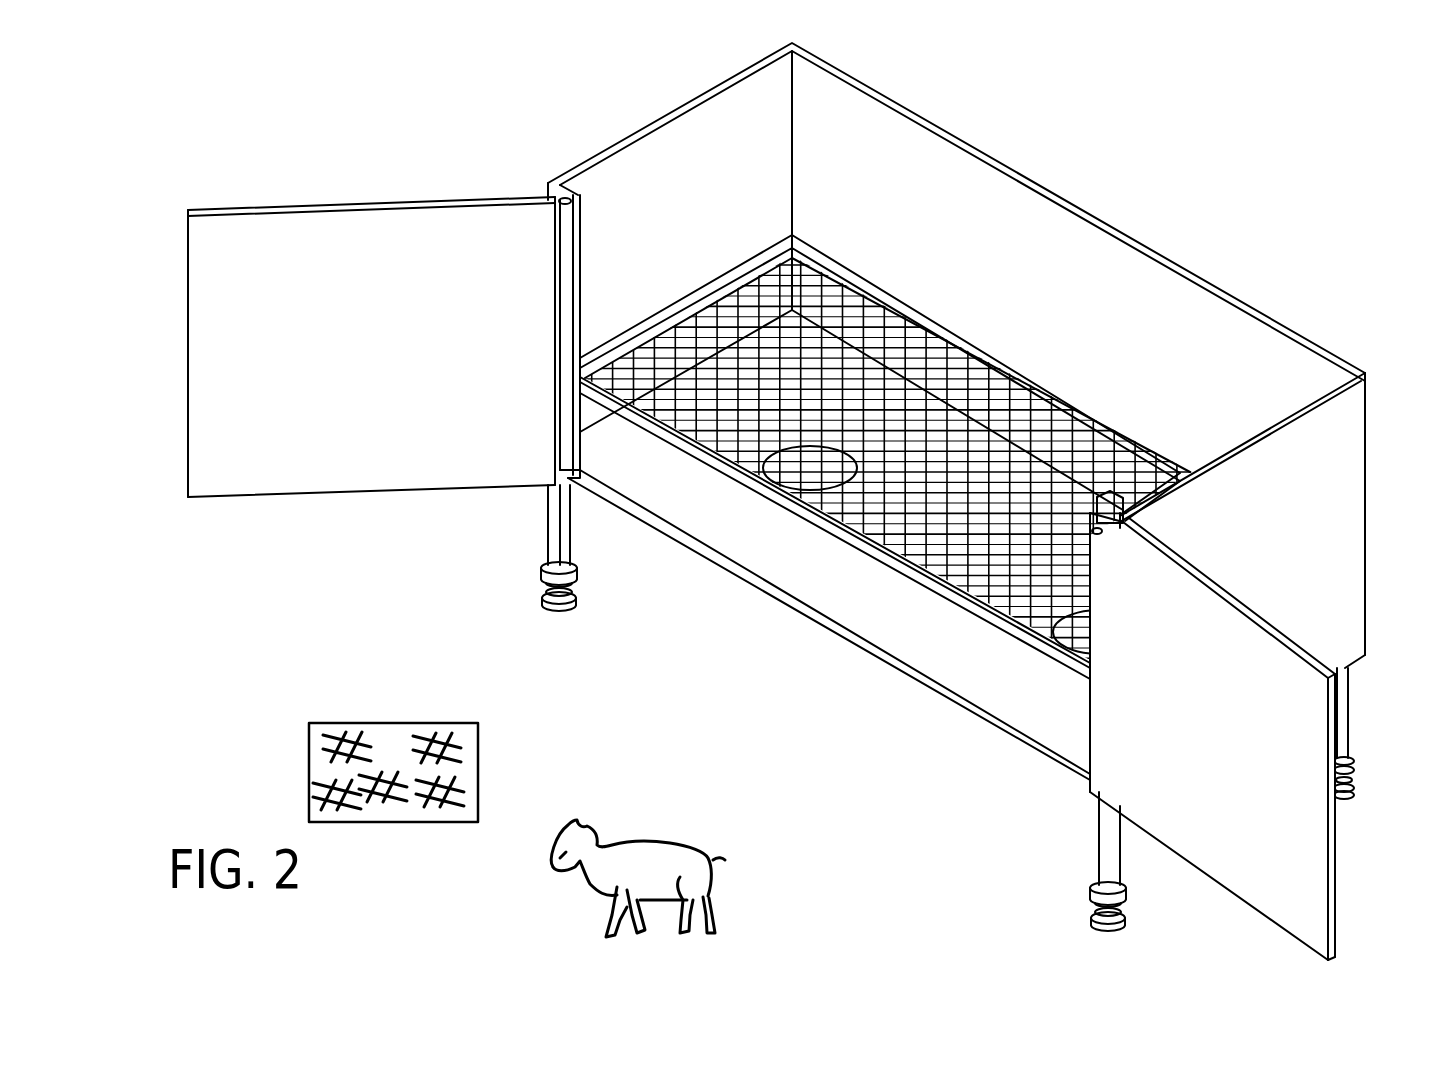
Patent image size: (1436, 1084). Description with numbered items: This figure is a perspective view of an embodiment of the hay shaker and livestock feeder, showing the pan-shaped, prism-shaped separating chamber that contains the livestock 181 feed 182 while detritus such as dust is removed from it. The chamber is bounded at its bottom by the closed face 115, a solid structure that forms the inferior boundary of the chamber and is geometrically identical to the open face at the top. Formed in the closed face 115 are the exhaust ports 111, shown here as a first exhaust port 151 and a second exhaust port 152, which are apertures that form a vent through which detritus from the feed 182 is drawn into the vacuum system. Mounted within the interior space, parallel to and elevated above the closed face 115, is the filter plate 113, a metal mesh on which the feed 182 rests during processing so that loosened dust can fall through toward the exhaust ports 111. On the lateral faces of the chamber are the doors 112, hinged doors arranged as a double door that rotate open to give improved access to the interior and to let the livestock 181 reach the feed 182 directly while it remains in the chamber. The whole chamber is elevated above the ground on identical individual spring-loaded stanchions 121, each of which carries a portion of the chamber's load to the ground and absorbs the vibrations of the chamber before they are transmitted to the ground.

The plurality of exhaust ports 111 is at (810, 512).
The one or more doors 112 is at (285, 470).
The filter plate 113 is at (882, 323).
The closed face 115 is at (921, 683).
The individual spring-loaded stanchion 121 is at (553, 545).
The first exhaust port 151 is at (808, 492).
The second exhaust port 152 is at (1080, 657).
The livestock 181 is at (653, 853).
The feed 182 is at (472, 793).